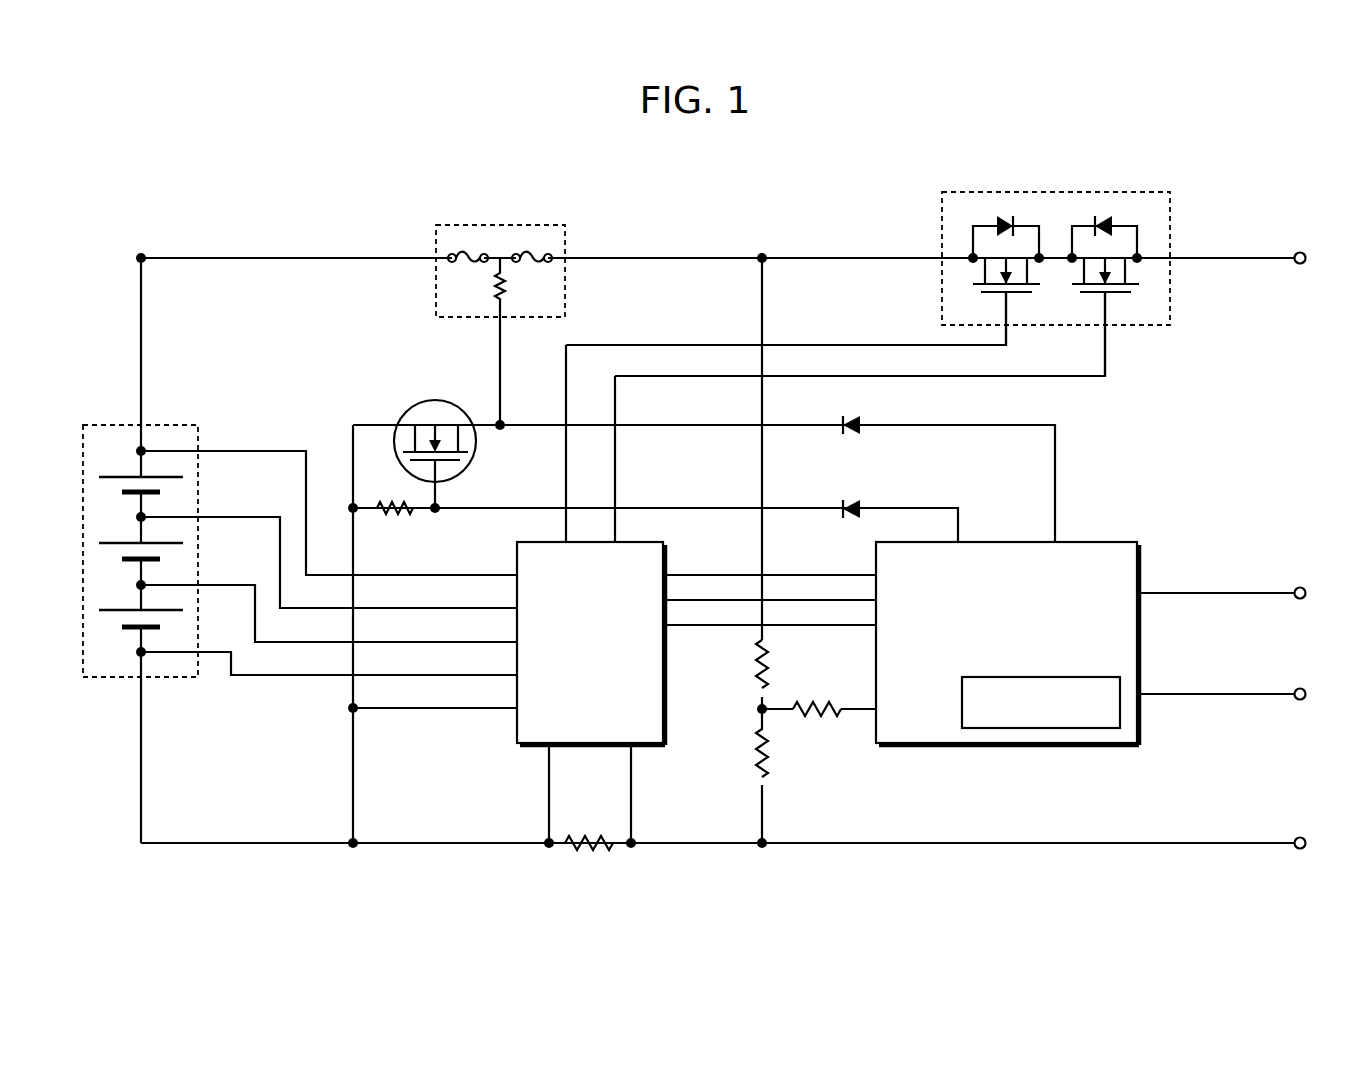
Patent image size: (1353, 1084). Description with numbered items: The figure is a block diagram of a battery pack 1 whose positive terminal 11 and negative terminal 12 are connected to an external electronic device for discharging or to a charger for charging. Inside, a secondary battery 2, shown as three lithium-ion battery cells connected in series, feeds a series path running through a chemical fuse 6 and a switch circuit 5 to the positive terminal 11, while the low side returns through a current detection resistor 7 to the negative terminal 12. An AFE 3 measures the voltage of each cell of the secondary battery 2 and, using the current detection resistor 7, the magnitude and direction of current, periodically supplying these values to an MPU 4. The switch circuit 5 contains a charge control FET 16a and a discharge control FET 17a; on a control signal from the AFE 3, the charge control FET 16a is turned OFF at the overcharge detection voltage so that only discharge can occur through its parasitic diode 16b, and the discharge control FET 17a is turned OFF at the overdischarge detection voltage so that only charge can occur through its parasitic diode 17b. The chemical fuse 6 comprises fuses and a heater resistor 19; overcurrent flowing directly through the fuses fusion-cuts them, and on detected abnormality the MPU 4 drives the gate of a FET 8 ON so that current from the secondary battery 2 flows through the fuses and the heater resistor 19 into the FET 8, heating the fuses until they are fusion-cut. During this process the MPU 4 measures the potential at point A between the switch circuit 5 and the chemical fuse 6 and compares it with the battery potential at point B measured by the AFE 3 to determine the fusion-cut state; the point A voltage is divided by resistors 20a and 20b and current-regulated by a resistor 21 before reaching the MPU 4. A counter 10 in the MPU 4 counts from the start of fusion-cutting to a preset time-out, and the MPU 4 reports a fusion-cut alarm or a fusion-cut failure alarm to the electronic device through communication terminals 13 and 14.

The battery pack 1 is at (791, 139).
The secondary battery 2 is at (273, 544).
The AFE 3 is at (667, 726).
The MPU 4 is at (1019, 644).
The switch circuit 5 is at (1056, 261).
The chemical fuse 6 is at (499, 250).
The current detection resistor 7 is at (600, 848).
The FET 8 is at (470, 457).
The counter 10 is at (1105, 728).
The positive terminal 11 is at (1300, 252).
The negative terminal 12 is at (1300, 837).
The communication terminal 13 is at (1300, 587).
The communication terminal 14 is at (1300, 688).
The charge control FET 16a is at (973, 284).
The parasitic diode 16b is at (1006, 226).
The discharge control FET 17a is at (1139, 284).
The parasitic diode 17b is at (1105, 226).
The heater resistor 19 is at (505, 283).
The resistor 20a is at (770, 651).
The resistor 20b is at (768, 776).
The resistor 21 is at (830, 716).